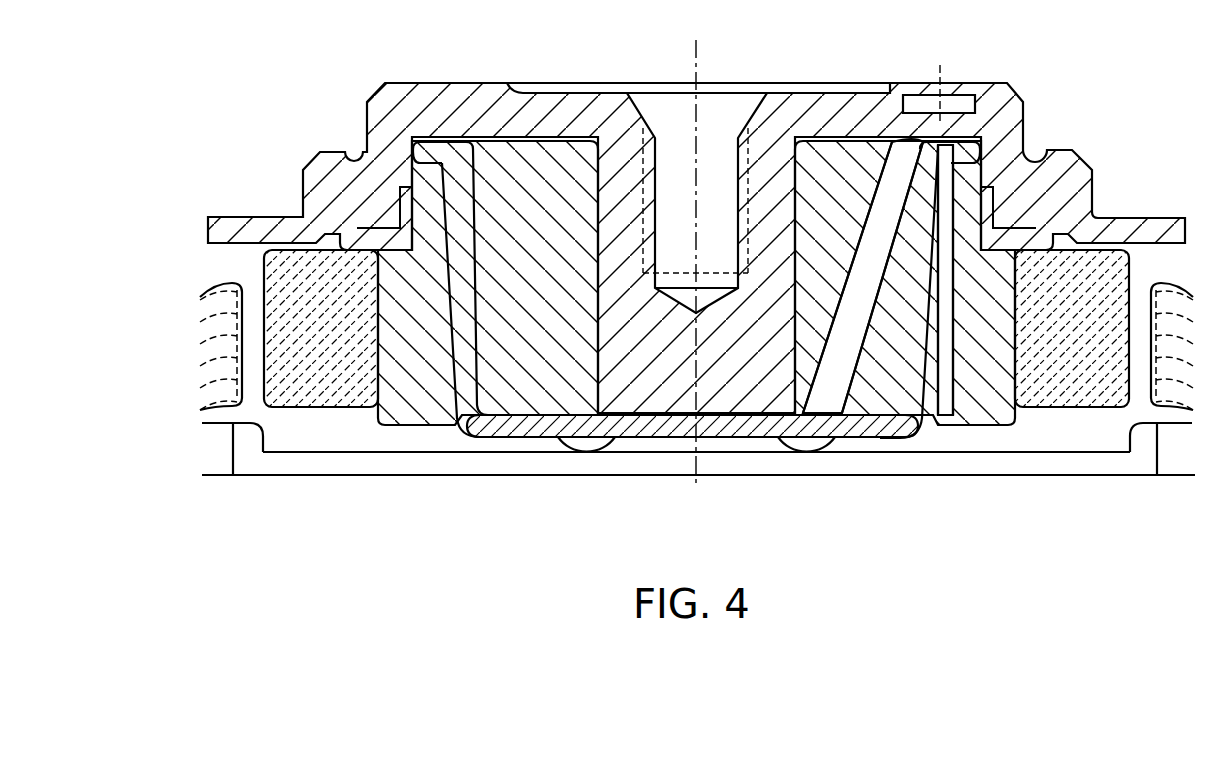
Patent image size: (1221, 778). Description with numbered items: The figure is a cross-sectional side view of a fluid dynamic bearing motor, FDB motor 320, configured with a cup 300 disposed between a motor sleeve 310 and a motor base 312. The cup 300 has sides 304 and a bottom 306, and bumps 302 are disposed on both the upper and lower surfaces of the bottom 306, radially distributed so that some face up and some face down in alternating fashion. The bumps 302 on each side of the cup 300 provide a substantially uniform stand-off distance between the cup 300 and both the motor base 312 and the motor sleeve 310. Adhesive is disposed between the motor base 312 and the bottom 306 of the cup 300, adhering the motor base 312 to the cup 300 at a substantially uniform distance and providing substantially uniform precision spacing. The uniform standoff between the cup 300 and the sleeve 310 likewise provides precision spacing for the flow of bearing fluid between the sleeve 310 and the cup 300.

The cup 300 is at (462, 413).
The bumps 302 is at (592, 448).
The sides 304 is at (940, 216).
The bottom 306 is at (865, 428).
The motor sleeve 310 is at (515, 410).
The motor base 312 is at (567, 477).
The FDB motor 320 is at (210, 126).